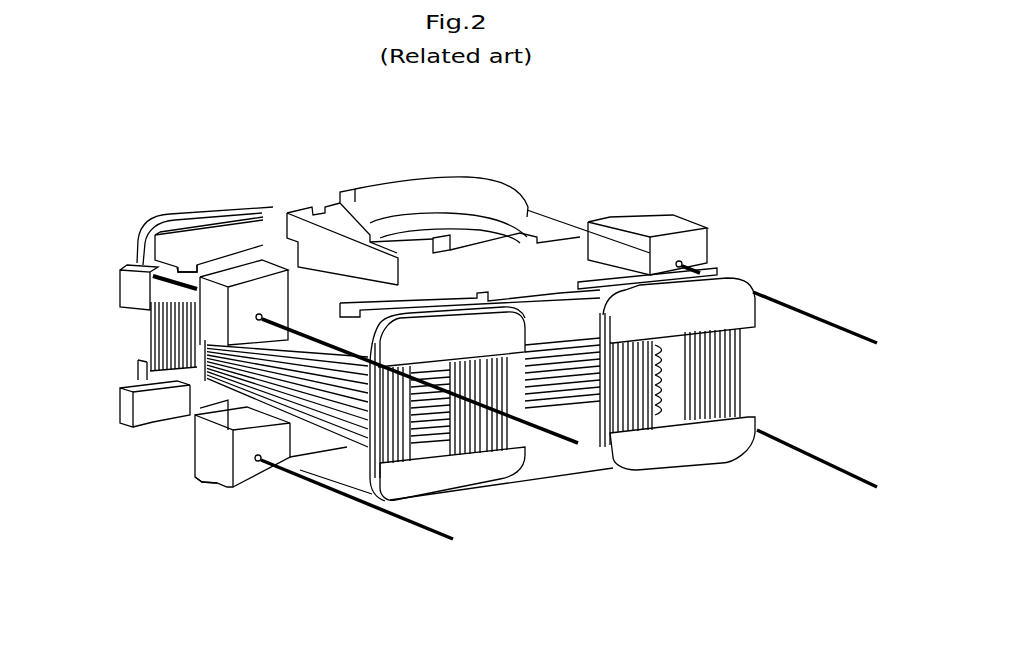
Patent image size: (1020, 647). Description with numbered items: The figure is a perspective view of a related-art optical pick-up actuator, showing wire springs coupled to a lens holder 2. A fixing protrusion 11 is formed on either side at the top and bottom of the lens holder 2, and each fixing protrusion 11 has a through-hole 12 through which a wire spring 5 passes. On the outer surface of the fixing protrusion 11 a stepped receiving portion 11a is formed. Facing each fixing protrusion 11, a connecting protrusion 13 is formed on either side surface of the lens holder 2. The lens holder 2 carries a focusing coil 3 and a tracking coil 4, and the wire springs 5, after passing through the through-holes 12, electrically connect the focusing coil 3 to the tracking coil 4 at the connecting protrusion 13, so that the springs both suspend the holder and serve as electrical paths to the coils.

The lens holder 2 is at (592, 196).
The focusing coil 3 is at (244, 377).
The tracking coil 4 is at (167, 328).
The wire spring 5 is at (393, 516).
The fixing protrusion 11 is at (216, 298).
The stepped receiving portion 11a is at (223, 255).
The through-hole 12 is at (259, 463).
The connecting protrusion 13 is at (127, 408).